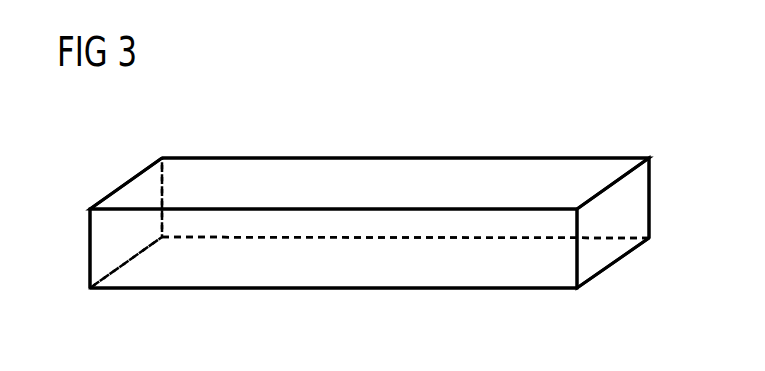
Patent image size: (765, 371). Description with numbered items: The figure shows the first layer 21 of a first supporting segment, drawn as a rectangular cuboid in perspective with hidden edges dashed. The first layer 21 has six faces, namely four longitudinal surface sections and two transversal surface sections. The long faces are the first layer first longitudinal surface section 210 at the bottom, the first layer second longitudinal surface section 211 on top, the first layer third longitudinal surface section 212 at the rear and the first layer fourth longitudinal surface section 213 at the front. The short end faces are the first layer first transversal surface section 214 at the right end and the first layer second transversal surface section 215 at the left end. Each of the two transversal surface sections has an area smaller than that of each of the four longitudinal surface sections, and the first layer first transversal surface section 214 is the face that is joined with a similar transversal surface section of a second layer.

The first layer 21 is at (437, 105).
The first layer first longitudinal surface section 210 is at (270, 270).
The first layer second longitudinal surface section 211 is at (280, 168).
The first layer third longitudinal surface section 212 is at (540, 177).
The first layer fourth longitudinal surface section 213 is at (507, 268).
The first layer first transversal surface section 214 is at (628, 214).
The first layer second transversal surface section 215 is at (140, 193).